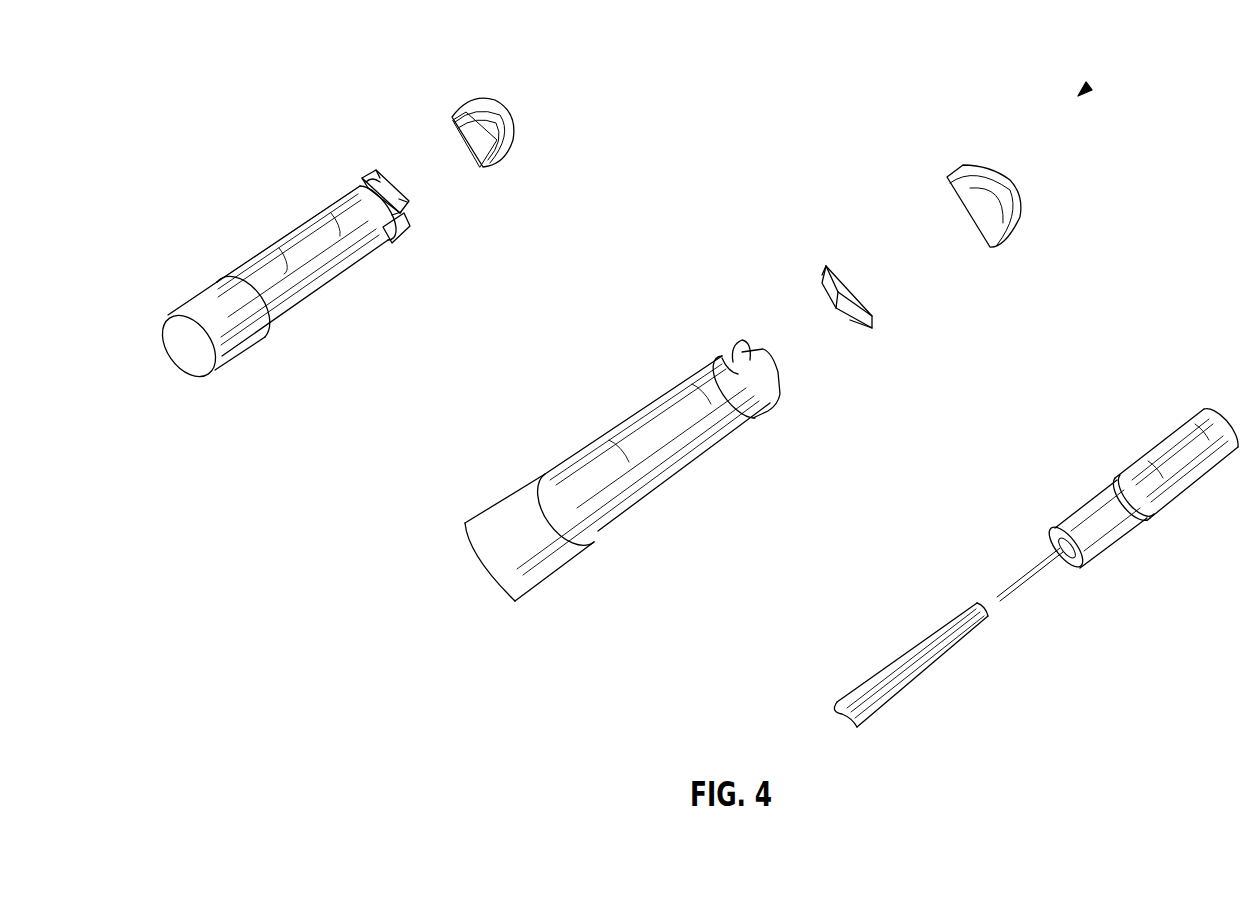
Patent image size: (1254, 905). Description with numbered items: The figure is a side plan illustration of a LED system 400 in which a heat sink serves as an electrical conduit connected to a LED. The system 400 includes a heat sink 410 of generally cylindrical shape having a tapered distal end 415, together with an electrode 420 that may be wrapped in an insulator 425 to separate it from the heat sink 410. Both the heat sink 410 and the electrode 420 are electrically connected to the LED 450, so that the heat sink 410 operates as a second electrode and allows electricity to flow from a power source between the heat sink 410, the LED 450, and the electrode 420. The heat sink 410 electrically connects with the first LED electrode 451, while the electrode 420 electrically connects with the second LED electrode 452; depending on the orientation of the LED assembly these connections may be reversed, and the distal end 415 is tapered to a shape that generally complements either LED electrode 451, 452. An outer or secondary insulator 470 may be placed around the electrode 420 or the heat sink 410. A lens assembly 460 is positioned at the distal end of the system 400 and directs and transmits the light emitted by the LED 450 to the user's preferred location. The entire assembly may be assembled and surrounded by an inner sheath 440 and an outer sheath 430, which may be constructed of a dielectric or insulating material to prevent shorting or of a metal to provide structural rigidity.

The LED system 400 is at (1082, 92).
The heat sink 410 is at (275, 297).
The distal end 415 is at (388, 240).
The electrode 420 is at (372, 190).
The insulator 425 is at (333, 230).
The outer sheath 430 is at (250, 352).
The inner sheath 440 is at (273, 248).
The LED 450 is at (370, 180).
The first LED electrode 451 is at (405, 200).
The second LED electrode 452 is at (398, 222).
The lens assembly 460 is at (513, 115).
The secondary insulator 470 is at (898, 657).